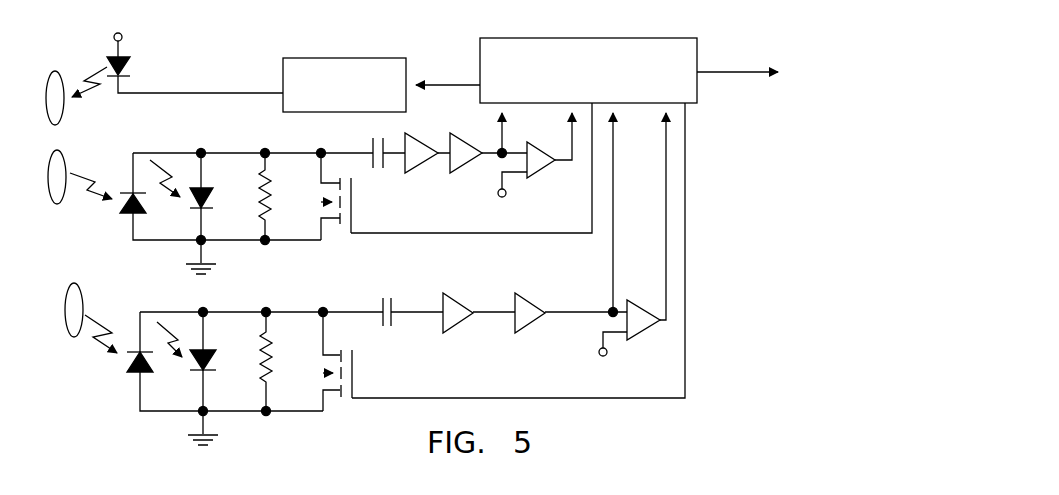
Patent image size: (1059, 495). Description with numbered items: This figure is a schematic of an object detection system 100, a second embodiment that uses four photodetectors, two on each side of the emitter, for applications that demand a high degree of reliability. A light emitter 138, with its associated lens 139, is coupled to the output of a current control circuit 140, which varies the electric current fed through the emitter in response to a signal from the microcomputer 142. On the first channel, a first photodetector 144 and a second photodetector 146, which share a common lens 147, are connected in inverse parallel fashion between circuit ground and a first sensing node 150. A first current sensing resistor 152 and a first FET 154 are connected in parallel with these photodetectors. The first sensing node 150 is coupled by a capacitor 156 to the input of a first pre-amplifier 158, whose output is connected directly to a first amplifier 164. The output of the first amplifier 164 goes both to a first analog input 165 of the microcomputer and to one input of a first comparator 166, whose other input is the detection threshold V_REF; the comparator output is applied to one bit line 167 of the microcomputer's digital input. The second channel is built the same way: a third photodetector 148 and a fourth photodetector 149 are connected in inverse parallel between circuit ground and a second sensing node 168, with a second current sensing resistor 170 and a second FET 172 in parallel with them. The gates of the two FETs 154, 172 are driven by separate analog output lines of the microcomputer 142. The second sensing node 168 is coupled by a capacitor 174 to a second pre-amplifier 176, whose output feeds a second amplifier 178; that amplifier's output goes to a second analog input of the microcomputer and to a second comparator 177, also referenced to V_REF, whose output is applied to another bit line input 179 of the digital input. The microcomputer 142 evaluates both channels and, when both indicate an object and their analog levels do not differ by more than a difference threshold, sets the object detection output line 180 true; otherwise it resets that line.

The object detection system 100 is at (622, 415).
The light emitter 138 is at (110, 55).
The lens 139 is at (64, 104).
The current control circuit 140 is at (347, 58).
The microcomputer 142 is at (490, 62).
The first photodetector 144 is at (125, 212).
The second photodetector 146 is at (197, 212).
The common lens 147 is at (64, 160).
The third photodetector 148 is at (135, 372).
The fourth photodetector 149 is at (78, 290).
The first sensing node 150 is at (263, 150).
The first current sensing resistor 152 is at (270, 210).
The first FET 154 is at (351, 226).
The capacitor 156 is at (375, 150).
The first pre-amplifier 158 is at (410, 140).
The first amplifier 164 is at (470, 172).
The first analog input 165 is at (503, 125).
The first comparator 166 is at (548, 165).
The bit line 167 is at (573, 150).
The second sensing node 168 is at (266, 310).
The second current sensing resistor 170 is at (272, 378).
The second FET 172 is at (352, 382).
The capacitor 174 is at (382, 305).
The second pre-amplifier 176 is at (450, 325).
The second comparator 177 is at (630, 302).
The second amplifier 178 is at (525, 290).
The bit line input 179 is at (662, 238).
The object detection output line 180 is at (722, 72).